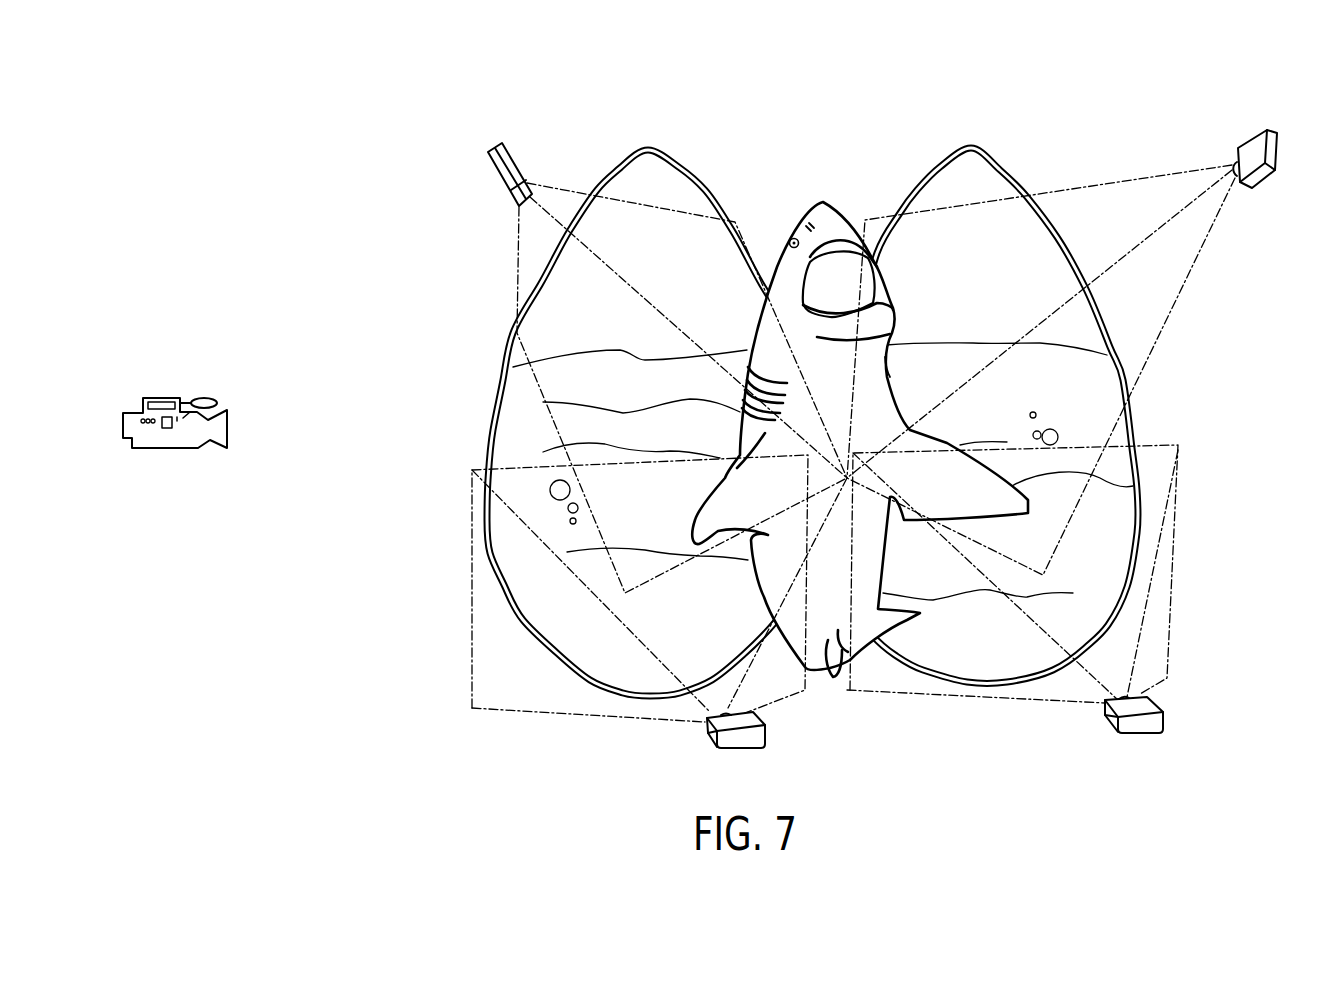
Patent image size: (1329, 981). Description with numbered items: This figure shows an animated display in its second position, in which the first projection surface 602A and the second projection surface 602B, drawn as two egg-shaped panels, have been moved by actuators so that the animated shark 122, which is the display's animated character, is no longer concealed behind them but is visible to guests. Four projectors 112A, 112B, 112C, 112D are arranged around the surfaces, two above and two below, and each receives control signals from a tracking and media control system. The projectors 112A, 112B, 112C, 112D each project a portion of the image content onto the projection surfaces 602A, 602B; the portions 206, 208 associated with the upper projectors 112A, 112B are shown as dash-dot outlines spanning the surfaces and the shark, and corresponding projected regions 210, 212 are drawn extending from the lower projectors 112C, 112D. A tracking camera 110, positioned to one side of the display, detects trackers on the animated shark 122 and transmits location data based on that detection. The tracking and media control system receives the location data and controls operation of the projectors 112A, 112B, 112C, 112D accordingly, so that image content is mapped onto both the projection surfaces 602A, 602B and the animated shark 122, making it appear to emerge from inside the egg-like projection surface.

The tracking camera 110 is at (193, 399).
The projector 112A is at (504, 153).
The projector 112B is at (1270, 184).
The projector 112C is at (768, 738).
The projector 112D is at (1165, 721).
The animated figure 122 is at (823, 200).
The portion of the image content 206 is at (572, 187).
The portion of the image content 208 is at (1107, 183).
The projection region of third projector 210 is at (545, 713).
The projection region of fourth projector 212 is at (1007, 700).
The first projection surface 602A is at (700, 190).
The second projection surface 602B is at (938, 163).